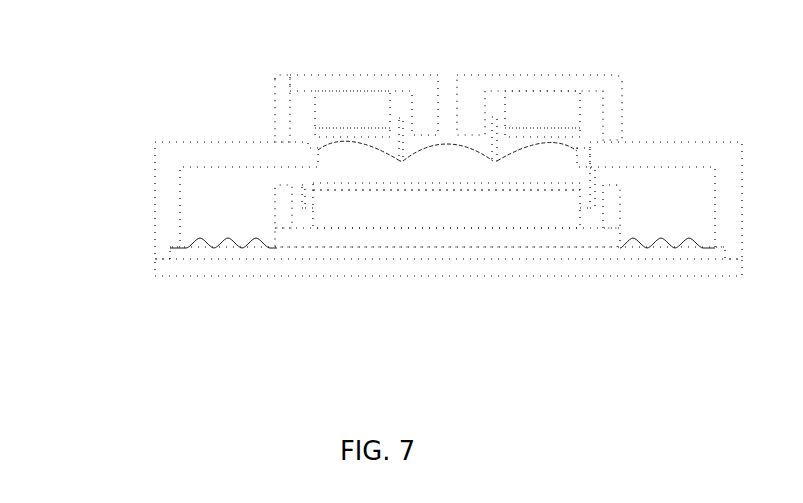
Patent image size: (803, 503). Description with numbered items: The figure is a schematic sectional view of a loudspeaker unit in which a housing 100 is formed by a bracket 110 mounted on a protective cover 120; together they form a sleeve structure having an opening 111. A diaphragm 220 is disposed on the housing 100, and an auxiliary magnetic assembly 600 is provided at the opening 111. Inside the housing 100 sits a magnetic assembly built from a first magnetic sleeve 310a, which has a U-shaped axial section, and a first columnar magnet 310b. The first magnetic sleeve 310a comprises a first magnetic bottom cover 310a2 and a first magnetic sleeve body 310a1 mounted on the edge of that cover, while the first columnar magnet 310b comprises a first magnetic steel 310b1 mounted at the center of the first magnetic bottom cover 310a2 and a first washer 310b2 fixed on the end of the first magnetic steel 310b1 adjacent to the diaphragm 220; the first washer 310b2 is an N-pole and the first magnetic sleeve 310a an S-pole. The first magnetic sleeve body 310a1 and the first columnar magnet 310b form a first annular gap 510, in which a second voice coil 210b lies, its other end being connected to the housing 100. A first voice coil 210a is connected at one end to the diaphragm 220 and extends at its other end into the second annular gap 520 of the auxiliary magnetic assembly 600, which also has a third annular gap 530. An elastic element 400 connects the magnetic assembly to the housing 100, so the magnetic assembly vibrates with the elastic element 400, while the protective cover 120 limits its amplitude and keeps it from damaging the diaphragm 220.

The housing 100 is at (88, 190).
The bracket 110 is at (165, 198).
The opening 111 is at (563, 155).
The protective cover 120 is at (197, 273).
The first voice coil 210a is at (400, 122).
The second voice coil 210b is at (303, 187).
The diaphragm 220 is at (522, 148).
The first magnetic sleeve 310a is at (535, 338).
The first magnetic sleeve body 310a1 is at (283, 213).
The first magnetic bottom cover 310a2 is at (398, 235).
The first columnar magnet 310b is at (723, 338).
The first magnetic steel 310b1 is at (518, 220).
The first washer 310b2 is at (547, 190).
The elastic element 400 is at (247, 250).
The first annular gap 510 is at (300, 222).
The second annular gap 520 is at (500, 103).
The third annular gap 530 is at (603, 113).
The auxiliary magnetic assembly 600 is at (643, 94).